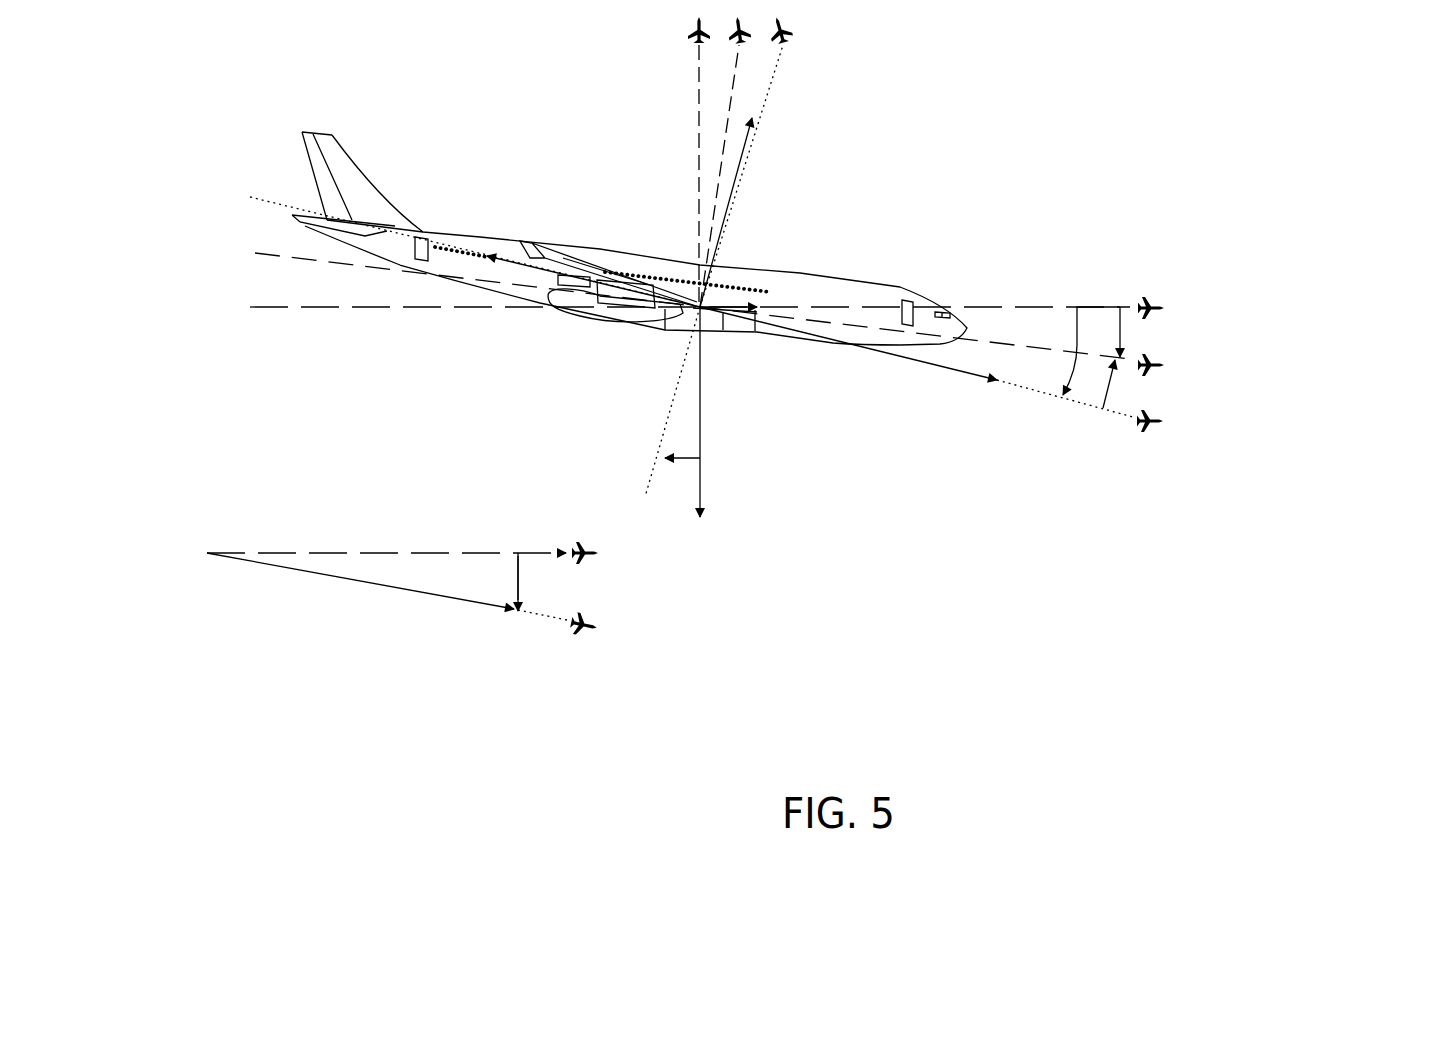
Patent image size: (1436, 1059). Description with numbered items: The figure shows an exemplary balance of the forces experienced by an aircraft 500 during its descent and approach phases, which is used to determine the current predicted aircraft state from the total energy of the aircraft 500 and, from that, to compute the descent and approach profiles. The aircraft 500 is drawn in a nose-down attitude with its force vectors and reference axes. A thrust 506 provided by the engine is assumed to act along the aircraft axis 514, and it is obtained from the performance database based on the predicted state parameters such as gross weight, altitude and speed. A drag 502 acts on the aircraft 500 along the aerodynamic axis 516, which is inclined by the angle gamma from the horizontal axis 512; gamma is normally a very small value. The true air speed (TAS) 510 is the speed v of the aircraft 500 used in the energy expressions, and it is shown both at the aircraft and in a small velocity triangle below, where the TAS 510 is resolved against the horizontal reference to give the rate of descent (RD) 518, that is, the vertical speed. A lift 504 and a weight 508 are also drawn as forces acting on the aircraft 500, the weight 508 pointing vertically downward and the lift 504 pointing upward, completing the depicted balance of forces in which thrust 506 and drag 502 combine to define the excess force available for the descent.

The aircraft 500 is at (1130, 587).
The drag 502 is at (545, 192).
The lift 504 is at (830, 93).
The thrust 506 is at (848, 222).
The weight 508 is at (815, 459).
The true air speed (TAS) 510 is at (937, 365).
The horizontal axis 512 is at (1164, 308).
The aircraft axis 514 is at (1164, 365).
The aerodynamic axis 516 is at (1163, 421).
The rate of descent (RD) 518 is at (577, 573).